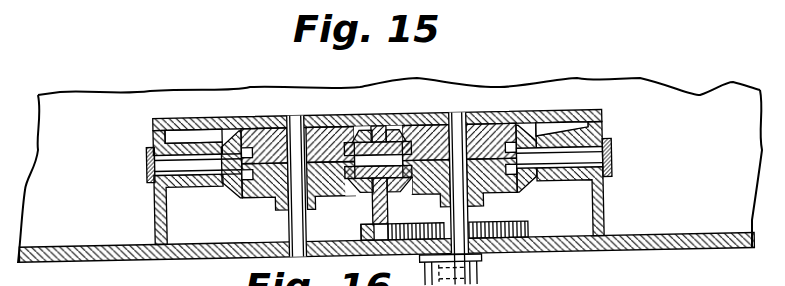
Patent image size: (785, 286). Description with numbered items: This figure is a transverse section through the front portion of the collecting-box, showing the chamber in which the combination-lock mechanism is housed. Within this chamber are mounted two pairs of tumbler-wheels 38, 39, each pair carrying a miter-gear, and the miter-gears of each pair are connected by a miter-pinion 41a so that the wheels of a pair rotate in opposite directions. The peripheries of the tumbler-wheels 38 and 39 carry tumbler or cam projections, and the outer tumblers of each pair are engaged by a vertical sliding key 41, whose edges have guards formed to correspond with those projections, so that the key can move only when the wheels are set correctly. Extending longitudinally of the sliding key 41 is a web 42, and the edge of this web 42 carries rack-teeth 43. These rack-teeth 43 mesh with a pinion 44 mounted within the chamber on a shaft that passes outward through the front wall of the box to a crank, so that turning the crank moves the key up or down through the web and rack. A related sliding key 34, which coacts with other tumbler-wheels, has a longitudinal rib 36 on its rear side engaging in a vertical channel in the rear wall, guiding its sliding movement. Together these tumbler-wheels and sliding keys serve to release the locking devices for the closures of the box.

The sliding key 34 is at (366, 130).
The longitudinal rib 36 is at (388, 133).
The tumbler-wheels 38 is at (265, 176).
The tumbler-wheels 39 is at (503, 193).
The vertical sliding key 41 is at (356, 183).
The miter-pinion 41a is at (224, 128).
The web 42 is at (388, 211).
The rack-teeth 43 is at (380, 229).
The pinion 44 is at (528, 236).